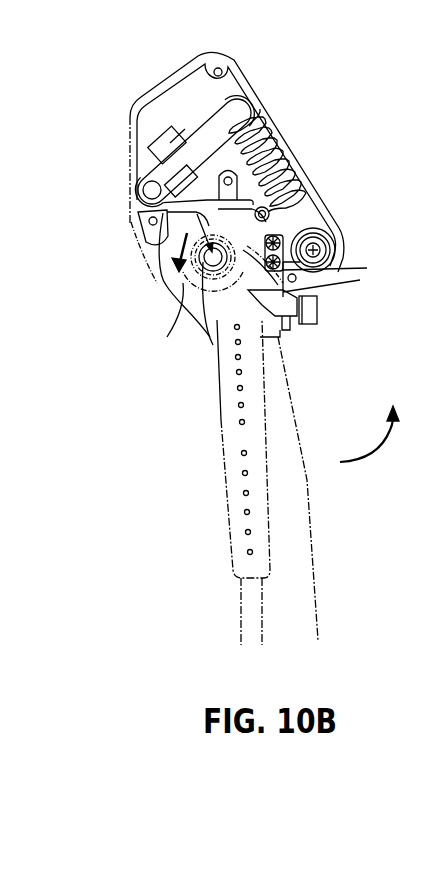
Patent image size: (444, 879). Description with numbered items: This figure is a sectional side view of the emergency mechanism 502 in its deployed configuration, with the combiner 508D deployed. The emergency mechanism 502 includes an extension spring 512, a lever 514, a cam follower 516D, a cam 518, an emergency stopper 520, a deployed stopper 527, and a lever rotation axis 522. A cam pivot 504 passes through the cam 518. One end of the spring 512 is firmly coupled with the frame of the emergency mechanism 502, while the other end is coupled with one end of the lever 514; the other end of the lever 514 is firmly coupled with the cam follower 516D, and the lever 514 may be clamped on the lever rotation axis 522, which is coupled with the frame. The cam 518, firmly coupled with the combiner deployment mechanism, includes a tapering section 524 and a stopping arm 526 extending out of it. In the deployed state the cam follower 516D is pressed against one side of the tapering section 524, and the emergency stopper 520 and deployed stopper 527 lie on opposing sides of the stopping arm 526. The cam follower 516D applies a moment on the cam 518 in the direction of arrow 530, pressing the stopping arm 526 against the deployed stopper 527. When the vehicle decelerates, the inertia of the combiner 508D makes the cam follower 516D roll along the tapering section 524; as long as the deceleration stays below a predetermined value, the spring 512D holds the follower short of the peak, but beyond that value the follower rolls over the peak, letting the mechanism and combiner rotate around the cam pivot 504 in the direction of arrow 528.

The emergency mechanism 502 is at (154, 50).
The lever 514 is at (183, 138).
The extension spring 512 is at (268, 142).
The spring 512D is at (293, 165).
The lever rotation axis 522 is at (143, 187).
The cam follower 516D is at (140, 223).
The deployed stopper 527 is at (283, 242).
The tapering section 524 is at (158, 243).
The stopping arm 526 is at (336, 262).
The arrow 530 is at (161, 302).
The emergency stopper 520 is at (300, 286).
The cam 518 is at (177, 338).
The cam pivot 504 is at (217, 343).
The arrow 528 is at (383, 450).
The combiner 508D is at (252, 607).